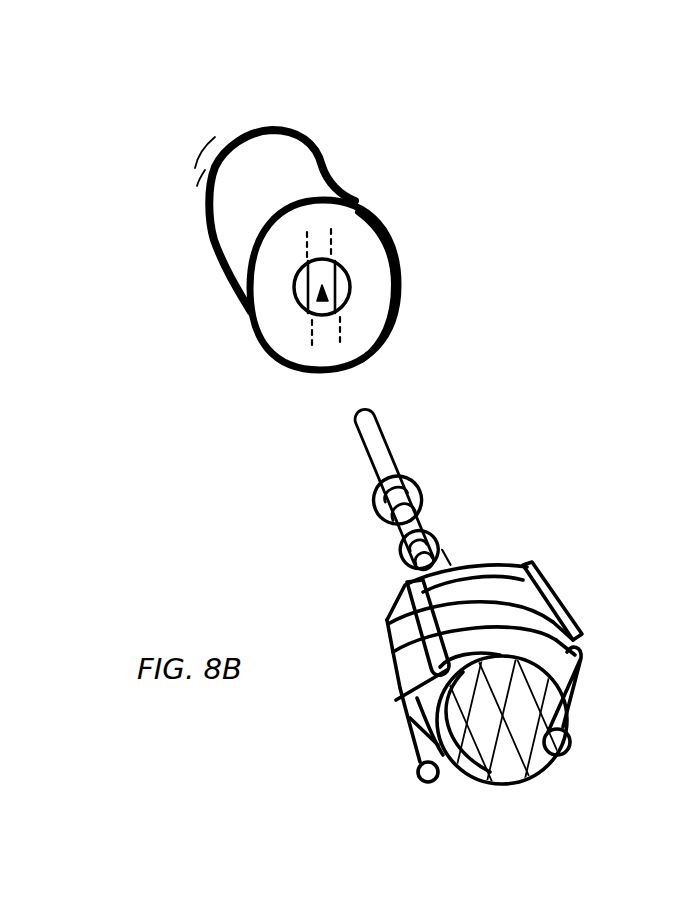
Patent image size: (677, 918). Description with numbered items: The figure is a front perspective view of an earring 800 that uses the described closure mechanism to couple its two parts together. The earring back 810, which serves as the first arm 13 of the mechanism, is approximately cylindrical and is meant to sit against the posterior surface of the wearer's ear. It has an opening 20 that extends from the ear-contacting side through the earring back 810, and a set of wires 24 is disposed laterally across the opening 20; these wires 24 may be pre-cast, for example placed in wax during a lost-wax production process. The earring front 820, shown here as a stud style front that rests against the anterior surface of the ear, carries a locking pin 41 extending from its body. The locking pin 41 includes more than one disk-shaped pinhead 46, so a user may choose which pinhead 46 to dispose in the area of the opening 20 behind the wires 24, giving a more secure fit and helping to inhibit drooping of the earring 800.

The earring 800 is at (448, 128).
The earring back 810 is at (305, 168).
The first arm 13 is at (270, 208).
The opening 20 is at (325, 316).
The set of wires 24 is at (350, 285).
The locking pin 41 is at (367, 455).
The pinheads 46 is at (401, 556).
The earring front 820 is at (502, 602).